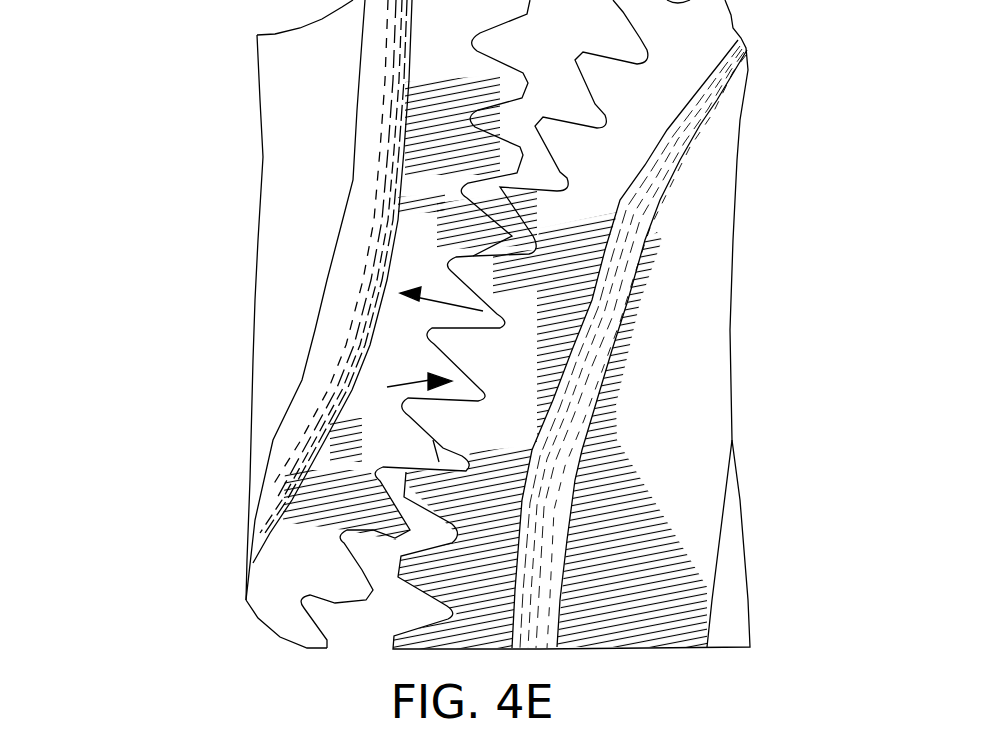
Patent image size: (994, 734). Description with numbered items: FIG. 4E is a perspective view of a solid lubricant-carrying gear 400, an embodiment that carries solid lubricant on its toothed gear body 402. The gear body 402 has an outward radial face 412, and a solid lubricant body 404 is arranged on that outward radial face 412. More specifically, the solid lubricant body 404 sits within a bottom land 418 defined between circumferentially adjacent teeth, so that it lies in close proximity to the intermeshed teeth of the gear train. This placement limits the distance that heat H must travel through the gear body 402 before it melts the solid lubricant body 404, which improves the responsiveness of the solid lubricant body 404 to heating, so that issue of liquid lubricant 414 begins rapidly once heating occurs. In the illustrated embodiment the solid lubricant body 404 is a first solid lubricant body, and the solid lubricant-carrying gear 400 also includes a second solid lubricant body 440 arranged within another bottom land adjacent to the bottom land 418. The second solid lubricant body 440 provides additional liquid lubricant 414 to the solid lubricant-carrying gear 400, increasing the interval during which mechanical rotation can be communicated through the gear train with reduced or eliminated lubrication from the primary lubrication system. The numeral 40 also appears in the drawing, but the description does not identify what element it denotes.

The housing 40 is at (663, 413).
The solid lubricant-carrying gear 400 is at (210, 624).
The gear body 402 is at (288, 177).
The solid lubricant body 404 is at (395, 541).
The outward radial face 412 is at (380, 551).
The liquid lubricant 414 is at (629, 344).
The bottom land 418 is at (370, 465).
The second solid lubricant body 440 is at (397, 400).
The heat H is at (443, 300).